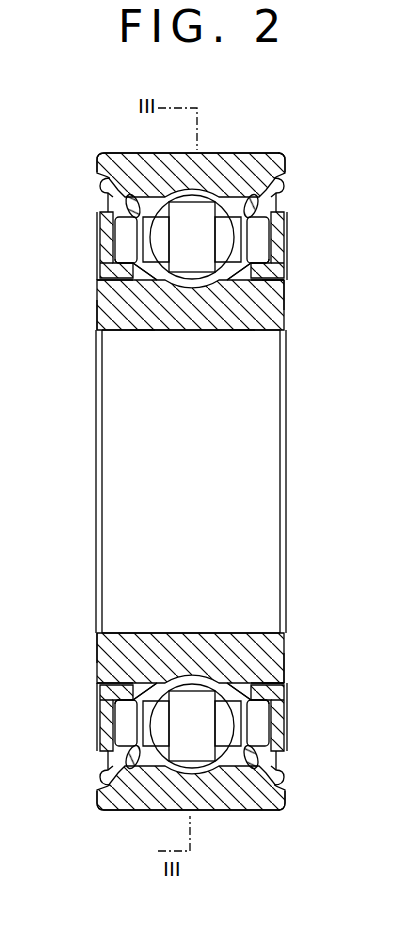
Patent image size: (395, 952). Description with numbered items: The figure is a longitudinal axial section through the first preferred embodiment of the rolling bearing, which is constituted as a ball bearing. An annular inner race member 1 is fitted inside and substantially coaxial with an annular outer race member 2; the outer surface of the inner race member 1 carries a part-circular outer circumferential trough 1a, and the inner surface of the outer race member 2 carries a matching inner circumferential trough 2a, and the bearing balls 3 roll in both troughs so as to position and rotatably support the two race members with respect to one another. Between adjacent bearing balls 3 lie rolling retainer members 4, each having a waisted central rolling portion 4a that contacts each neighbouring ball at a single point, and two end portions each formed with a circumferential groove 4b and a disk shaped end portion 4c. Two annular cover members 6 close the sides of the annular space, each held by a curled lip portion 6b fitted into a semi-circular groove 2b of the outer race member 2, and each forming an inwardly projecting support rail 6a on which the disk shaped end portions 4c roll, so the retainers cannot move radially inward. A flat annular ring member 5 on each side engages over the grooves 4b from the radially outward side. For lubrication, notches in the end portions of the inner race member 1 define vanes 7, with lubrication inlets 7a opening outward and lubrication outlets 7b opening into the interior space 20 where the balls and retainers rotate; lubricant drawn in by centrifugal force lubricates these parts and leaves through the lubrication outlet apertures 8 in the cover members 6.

The inner race member 1 is at (287, 643).
The outer circumferential trough 1a is at (198, 335).
The outer race member 2 is at (243, 153).
The inner circumferential trough 2a is at (205, 152).
The groove 2b is at (98, 153).
The bearing balls 3 is at (205, 196).
The rolling retainer member 4 is at (177, 242).
The central rolling portion 4a is at (205, 153).
The circumferential groove 4b is at (142, 335).
The disk shaped end portion 4c is at (100, 258).
The flat annular ring member 5 is at (103, 192).
The annular cover member 6 is at (107, 220).
The support rail 6a is at (108, 278).
The curled lip portion 6b is at (98, 173).
The vanes 7 is at (97, 330).
The lubrication inlets 7a is at (97, 303).
The lubrication outlets 7b is at (135, 282).
The lubrication outlet apertures 8 is at (284, 200).
The interior space 20 is at (280, 282).